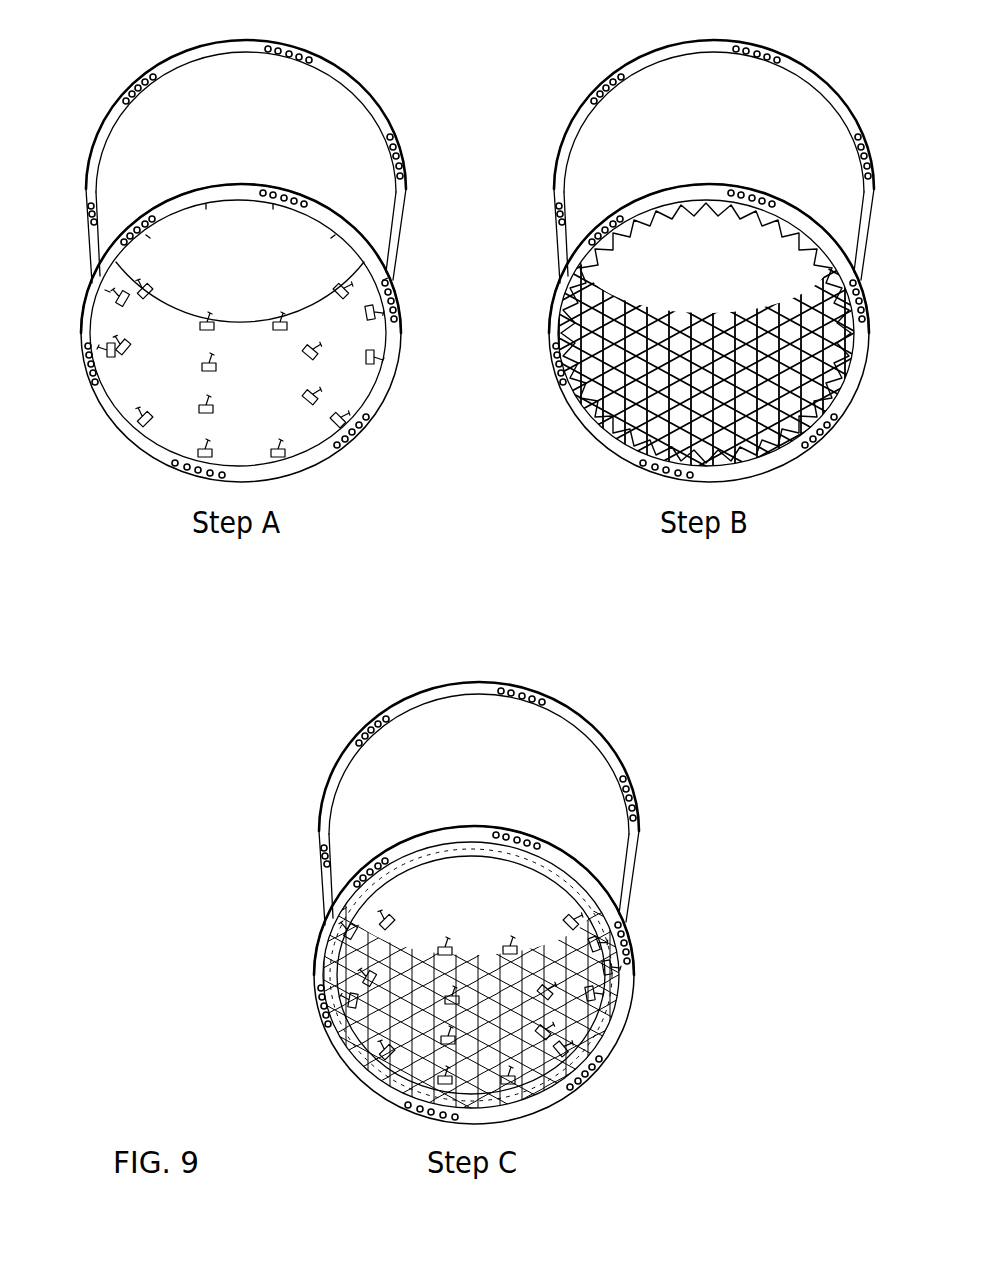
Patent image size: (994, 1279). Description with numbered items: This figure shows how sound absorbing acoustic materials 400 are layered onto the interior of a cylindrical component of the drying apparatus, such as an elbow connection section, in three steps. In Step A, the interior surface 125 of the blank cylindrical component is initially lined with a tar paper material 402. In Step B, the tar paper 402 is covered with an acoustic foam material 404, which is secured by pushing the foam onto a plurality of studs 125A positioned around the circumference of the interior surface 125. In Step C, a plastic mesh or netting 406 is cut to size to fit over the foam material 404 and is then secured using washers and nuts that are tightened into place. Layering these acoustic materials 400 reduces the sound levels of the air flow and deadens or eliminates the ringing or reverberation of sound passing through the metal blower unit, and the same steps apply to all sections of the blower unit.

The sound absorbing acoustic materials 400 is at (214, 248).
The tar paper material 402 is at (121, 386).
The interior surface 125 is at (300, 443).
The studs 125A is at (547, 1025).
The acoustic foam material 404 is at (773, 378).
The plastic mesh or netting 406 is at (533, 940).